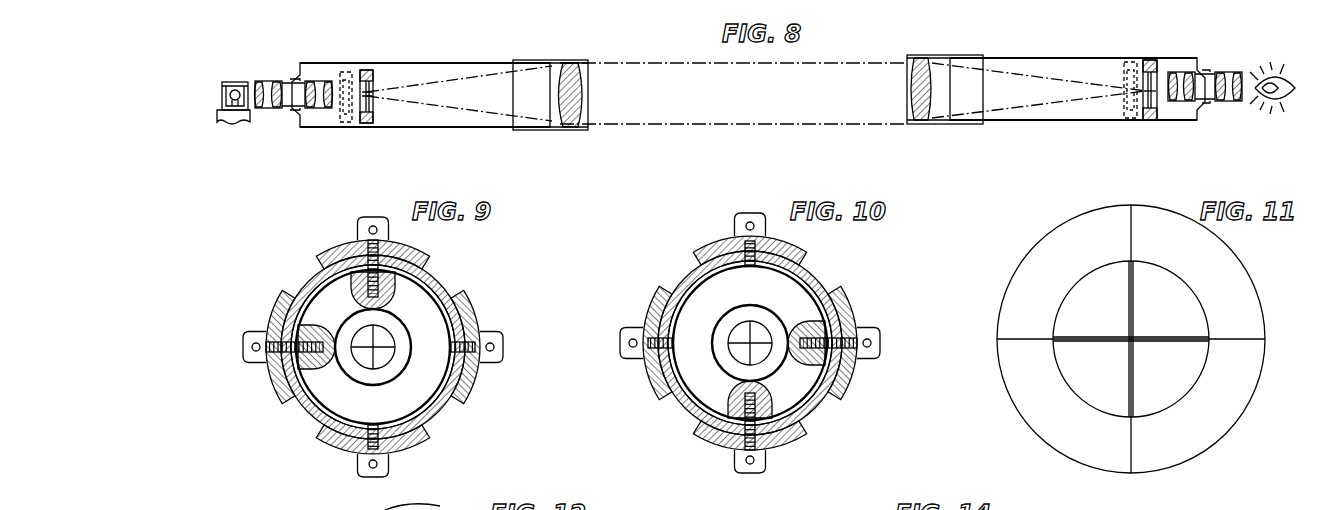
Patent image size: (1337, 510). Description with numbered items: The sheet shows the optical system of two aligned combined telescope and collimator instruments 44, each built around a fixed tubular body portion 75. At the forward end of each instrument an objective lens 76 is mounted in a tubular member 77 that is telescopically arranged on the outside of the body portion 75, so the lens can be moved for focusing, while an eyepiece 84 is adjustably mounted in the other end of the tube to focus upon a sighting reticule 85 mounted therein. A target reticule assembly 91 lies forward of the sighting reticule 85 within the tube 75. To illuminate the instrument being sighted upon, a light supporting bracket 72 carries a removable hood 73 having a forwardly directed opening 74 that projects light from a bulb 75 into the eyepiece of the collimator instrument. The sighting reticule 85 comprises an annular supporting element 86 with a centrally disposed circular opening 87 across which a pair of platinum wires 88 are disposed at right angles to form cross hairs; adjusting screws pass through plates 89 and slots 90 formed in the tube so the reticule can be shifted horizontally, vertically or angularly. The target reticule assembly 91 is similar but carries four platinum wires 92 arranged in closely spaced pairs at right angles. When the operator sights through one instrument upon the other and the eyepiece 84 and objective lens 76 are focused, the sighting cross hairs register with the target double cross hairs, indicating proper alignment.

In FIG. 8, the combined telescope and collimator instrument 44 is at (417, 62).
In FIG. 8, the light supporting bracket 72 is at (220, 118).
In FIG. 8, the removable hood 73 is at (236, 82).
In FIG. 8, the forwardly directed opening 74 is at (246, 85).
In FIG. 8, the tubular body portion 75 is at (222, 95).
In FIG. 9, the tubular body portion 75 is at (376, 345).
In FIG. 10, the tubular body portion 75 is at (744, 343).
In FIG. 8, the objective lens 76 is at (580, 95).
In FIG. 8, the tubular member 77 is at (555, 60).
In FIG. 8, the eyepiece 84 is at (276, 110).
In FIG. 8, the sighting reticule 85 is at (344, 75).
In FIG. 9, the sighting reticule 85 is at (366, 356).
In FIG. 9, the annular supporting element 86 is at (386, 355).
In FIG. 10, the annular supporting element 86 is at (763, 352).
In FIG. 9, the circular opening 87 is at (382, 343).
In FIG. 10, the circular opening 87 is at (736, 343).
In FIG. 8, the platinum wires 88 is at (345, 100).
In FIG. 9, the platinum wires 88 is at (392, 348).
In FIG. 11, the platinum wires 88 is at (1230, 338).
In FIG. 9, the plates 89 is at (373, 347).
In FIG. 10, the plates 89 is at (750, 343).
In FIG. 9, the slots 90 is at (358, 337).
In FIG. 10, the slots 90 is at (764, 360).
In FIG. 8, the target reticule assembly 91 is at (365, 70).
In FIG. 10, the target reticule assembly 91 is at (743, 352).
In FIG. 8, the platinum wires of target reticule 92 is at (370, 98).
In FIG. 10, the platinum wires of target reticule 92 is at (759, 328).
In FIG. 11, the platinum wires of target reticule 92 is at (1136, 312).